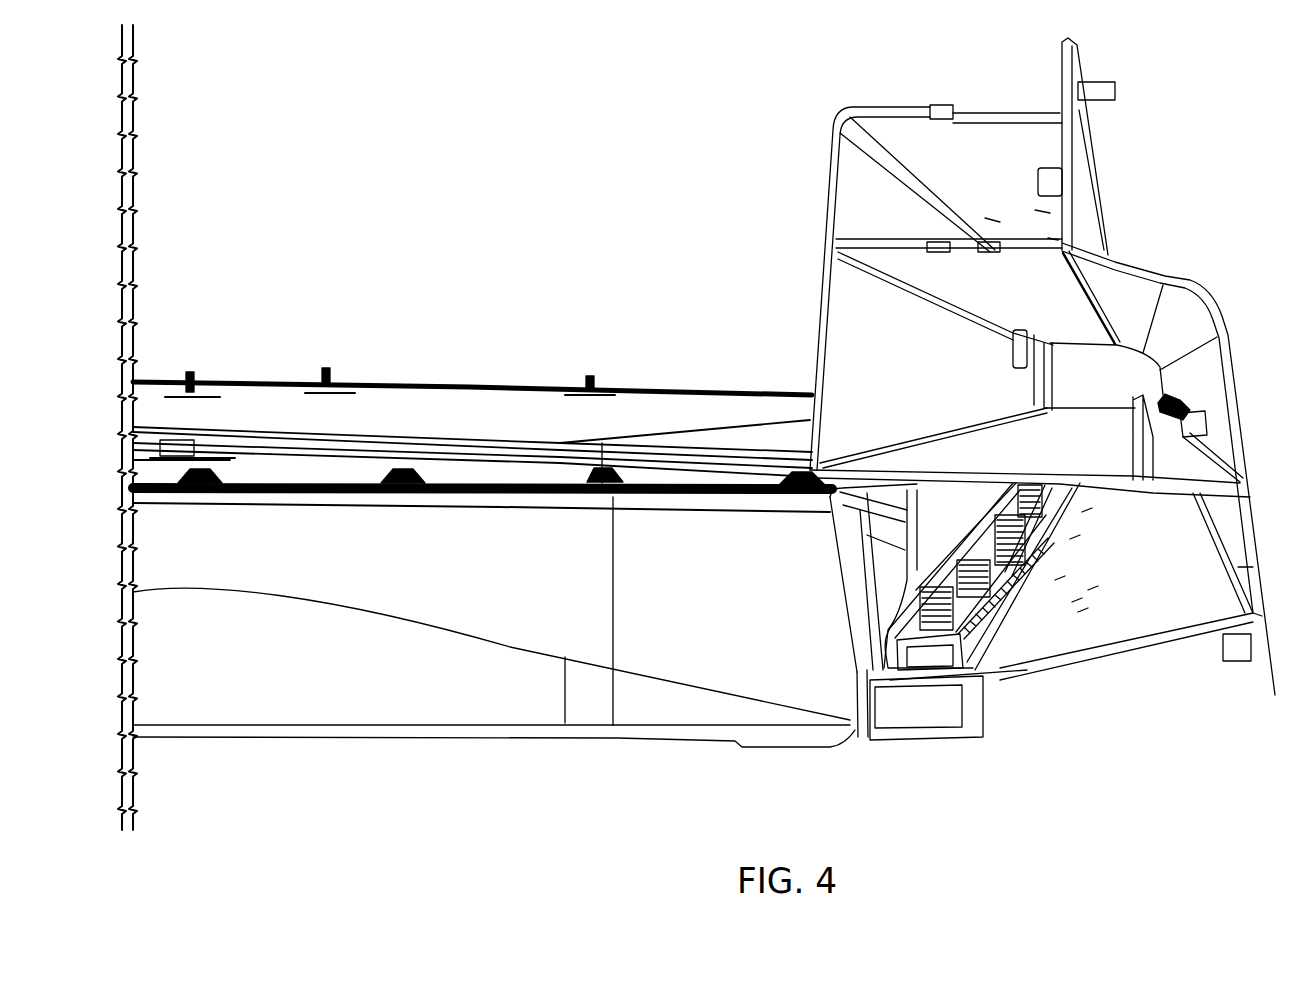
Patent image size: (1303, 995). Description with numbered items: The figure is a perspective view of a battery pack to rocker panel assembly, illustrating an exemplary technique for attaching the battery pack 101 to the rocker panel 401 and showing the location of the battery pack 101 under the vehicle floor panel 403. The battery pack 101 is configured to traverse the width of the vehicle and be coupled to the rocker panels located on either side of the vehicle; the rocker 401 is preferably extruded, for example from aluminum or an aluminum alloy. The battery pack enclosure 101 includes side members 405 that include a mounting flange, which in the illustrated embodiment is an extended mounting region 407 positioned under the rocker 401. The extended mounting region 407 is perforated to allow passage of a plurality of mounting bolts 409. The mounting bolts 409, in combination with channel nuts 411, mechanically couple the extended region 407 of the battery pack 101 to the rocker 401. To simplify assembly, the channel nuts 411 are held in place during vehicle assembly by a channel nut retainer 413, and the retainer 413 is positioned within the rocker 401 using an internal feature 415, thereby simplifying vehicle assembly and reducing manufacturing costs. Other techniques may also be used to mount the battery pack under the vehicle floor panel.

The battery pack 101 is at (330, 667).
The rocker panel 401 is at (1224, 266).
The vehicle floor panel 403 is at (521, 408).
The side members 405 is at (860, 587).
The extended mounting region 407 is at (942, 721).
The mounting bolts 409 is at (947, 583).
The channel nuts 411 is at (937, 637).
The channel nut retainer 413 is at (983, 597).
The internal feature 415 is at (1023, 578).